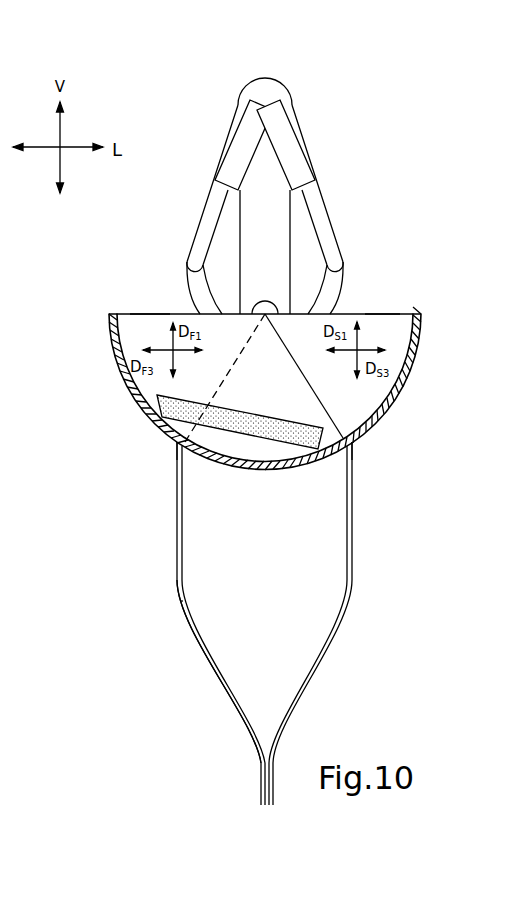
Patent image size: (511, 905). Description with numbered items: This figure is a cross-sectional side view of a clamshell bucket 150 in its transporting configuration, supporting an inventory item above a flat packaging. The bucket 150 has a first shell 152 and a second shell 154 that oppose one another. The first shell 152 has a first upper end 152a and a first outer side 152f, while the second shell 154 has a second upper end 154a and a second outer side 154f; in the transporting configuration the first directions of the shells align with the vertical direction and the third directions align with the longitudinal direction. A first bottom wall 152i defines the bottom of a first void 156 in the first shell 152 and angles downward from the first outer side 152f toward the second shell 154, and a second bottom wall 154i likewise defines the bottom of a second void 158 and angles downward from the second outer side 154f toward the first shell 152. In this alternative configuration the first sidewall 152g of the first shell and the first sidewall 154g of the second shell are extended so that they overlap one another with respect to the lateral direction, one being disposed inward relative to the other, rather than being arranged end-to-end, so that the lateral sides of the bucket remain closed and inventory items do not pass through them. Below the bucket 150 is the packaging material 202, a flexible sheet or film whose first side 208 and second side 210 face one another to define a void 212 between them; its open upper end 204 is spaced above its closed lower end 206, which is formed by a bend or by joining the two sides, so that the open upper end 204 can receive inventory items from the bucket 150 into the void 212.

The bucket 150 is at (365, 177).
The first shell 152 is at (90, 358).
The first upper end 152a is at (130, 313).
The first outer side 152f is at (108, 278).
The first sidewall of the first shell 152g is at (200, 385).
The first bottom wall 152i is at (170, 437).
The second shell 154 is at (434, 370).
The second upper end 154a is at (400, 314).
The second outer side 154f is at (420, 278).
The first sidewall of the second shell 154g is at (358, 408).
The second bottom wall 154i is at (358, 441).
The first void 156 is at (150, 308).
The second void 158 is at (383, 308).
The packaging material 202 is at (230, 716).
The open upper end 204 is at (163, 456).
The closed lower end 206 is at (247, 792).
The first side 208 is at (178, 598).
The second side 210 is at (352, 593).
The void 212 is at (283, 662).